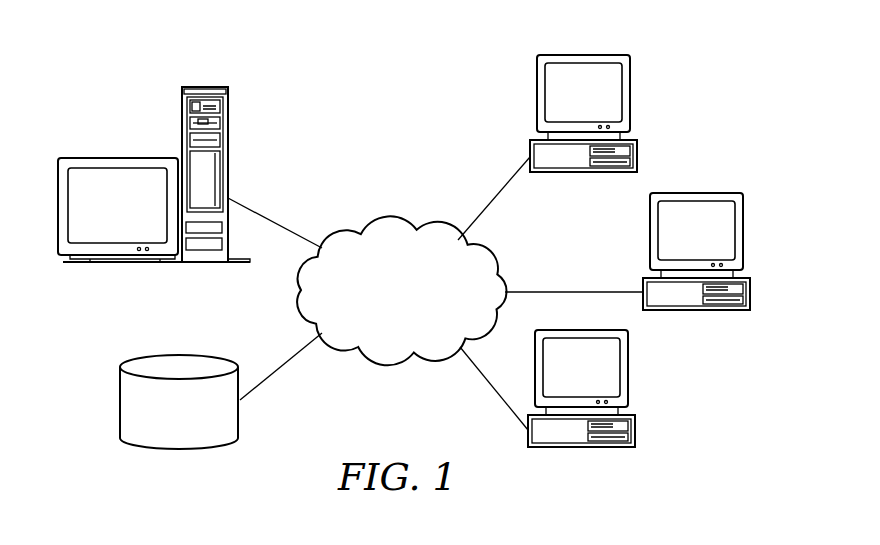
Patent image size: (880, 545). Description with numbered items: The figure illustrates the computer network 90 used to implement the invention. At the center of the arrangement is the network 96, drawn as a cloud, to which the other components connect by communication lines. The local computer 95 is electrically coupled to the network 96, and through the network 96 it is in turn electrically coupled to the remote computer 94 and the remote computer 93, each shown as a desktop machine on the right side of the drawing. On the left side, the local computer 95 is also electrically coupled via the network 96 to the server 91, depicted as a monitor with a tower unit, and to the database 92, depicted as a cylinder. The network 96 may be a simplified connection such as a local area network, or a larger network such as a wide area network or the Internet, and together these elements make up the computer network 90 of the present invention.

The computer network 90 is at (328, 84).
The server 91 is at (118, 158).
The database 92 is at (120, 401).
The remote computer 93 is at (630, 375).
The remote computer 94 is at (743, 236).
The local computer 95 is at (630, 103).
The network 96 is at (413, 306).